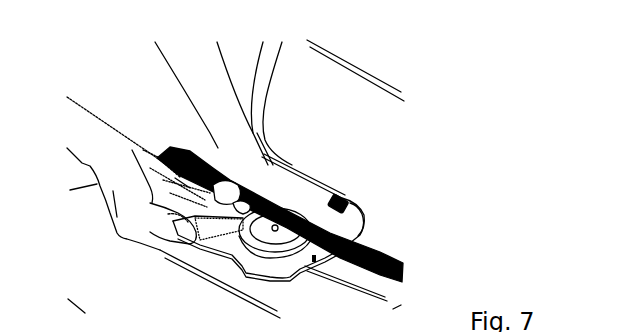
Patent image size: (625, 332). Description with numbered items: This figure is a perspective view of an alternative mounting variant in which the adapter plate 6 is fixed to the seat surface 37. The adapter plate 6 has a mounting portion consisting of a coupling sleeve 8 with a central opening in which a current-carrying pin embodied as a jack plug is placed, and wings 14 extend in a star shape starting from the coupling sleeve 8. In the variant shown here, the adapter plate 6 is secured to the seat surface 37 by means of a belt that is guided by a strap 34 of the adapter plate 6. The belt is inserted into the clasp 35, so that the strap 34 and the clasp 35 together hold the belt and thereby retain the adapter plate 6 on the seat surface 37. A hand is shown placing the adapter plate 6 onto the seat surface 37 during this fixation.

The adapter plate 6 is at (352, 204).
The coupling sleeve 8 is at (208, 220).
The wings 14 is at (365, 223).
The strap 34 is at (405, 263).
The clasp 35 is at (357, 268).
The seat surface 37 is at (185, 184).